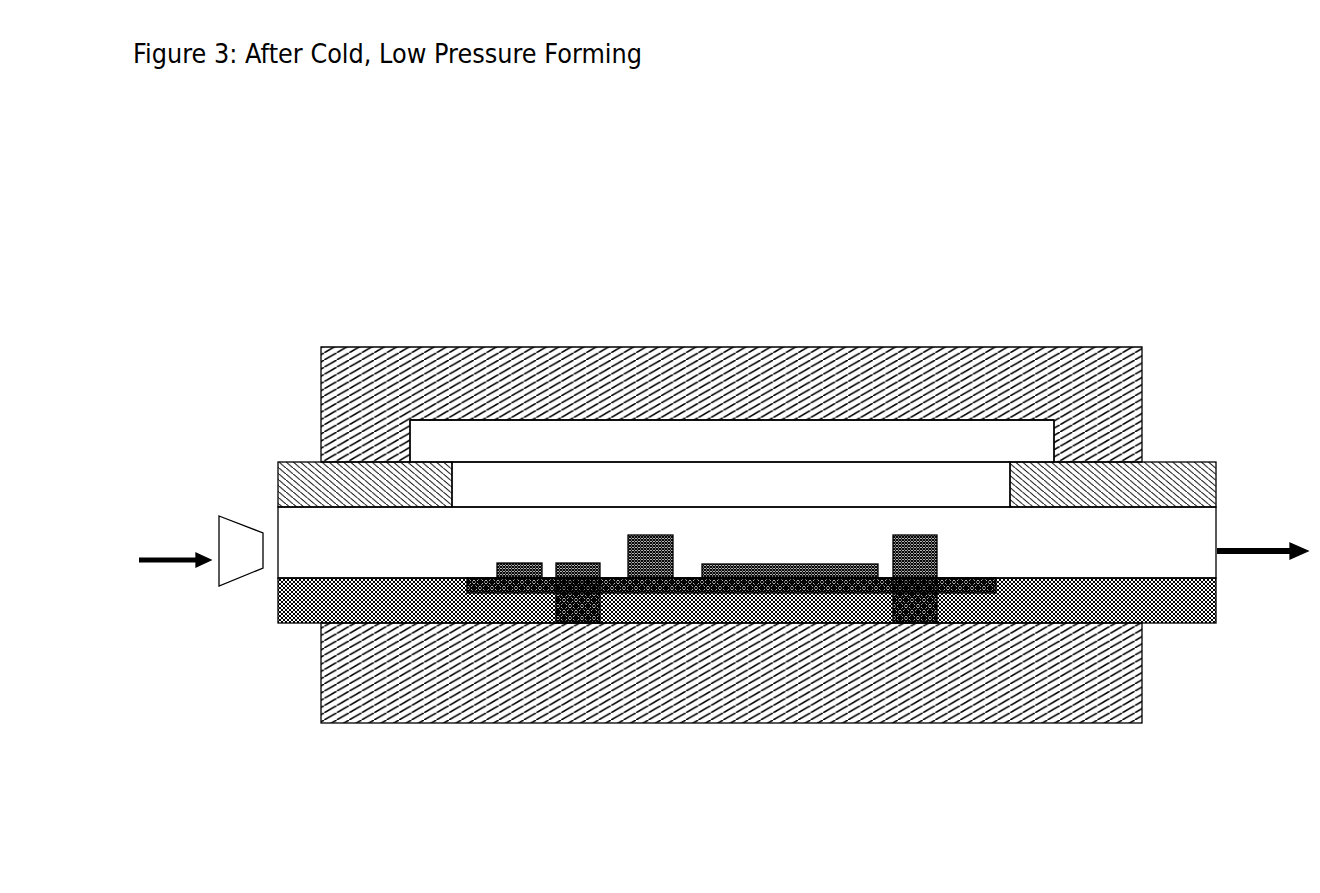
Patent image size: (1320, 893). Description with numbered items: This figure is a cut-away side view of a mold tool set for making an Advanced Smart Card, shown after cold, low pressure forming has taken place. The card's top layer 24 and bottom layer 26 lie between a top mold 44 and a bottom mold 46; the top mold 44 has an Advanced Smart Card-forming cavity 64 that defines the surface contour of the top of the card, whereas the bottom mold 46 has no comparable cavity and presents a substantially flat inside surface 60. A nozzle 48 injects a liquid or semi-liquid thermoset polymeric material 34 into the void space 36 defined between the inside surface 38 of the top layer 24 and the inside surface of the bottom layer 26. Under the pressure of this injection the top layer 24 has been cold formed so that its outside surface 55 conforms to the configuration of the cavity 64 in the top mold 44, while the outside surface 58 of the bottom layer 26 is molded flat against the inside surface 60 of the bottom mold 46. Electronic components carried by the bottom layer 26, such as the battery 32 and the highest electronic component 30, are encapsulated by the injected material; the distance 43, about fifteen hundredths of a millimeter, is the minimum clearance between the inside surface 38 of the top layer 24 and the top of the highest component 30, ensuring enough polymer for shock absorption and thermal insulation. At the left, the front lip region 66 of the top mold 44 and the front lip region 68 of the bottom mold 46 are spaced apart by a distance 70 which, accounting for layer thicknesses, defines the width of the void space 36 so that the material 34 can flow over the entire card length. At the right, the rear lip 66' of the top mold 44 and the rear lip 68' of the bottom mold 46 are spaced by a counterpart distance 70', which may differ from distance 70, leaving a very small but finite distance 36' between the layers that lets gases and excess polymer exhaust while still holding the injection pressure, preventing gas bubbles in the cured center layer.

The top layer 24 is at (539, 447).
The bottom layer 26 is at (754, 603).
The highest electronic component 30 is at (927, 537).
The battery 32 is at (833, 562).
The polymeric material 34 is at (159, 563).
The void space 36 is at (511, 555).
The distance at rear lip 36' is at (981, 565).
The inside surface of the top layer 38 is at (761, 461).
The minimum clearance distance 43 is at (981, 755).
The top mold 44 is at (585, 404).
The bottom mold 46 is at (673, 695).
The nozzle 48 is at (241, 551).
The outside surface of the top layer 55 is at (640, 417).
The outside surface of the bottom layer 58 is at (643, 625).
The inside surface of the bottom mold 60 is at (833, 625).
The Advanced Smart Card-forming cavity 64 is at (843, 438).
The front lip region of the top mold 66 is at (731, 359).
The rear lip of the top mold 66' is at (1098, 359).
The front lip region of the bottom mold 68 is at (364, 694).
The rear lip of the bottom mold 68' is at (1098, 706).
The distance between front lips 70 is at (365, 532).
The distance between rear lips 70' is at (1113, 539).